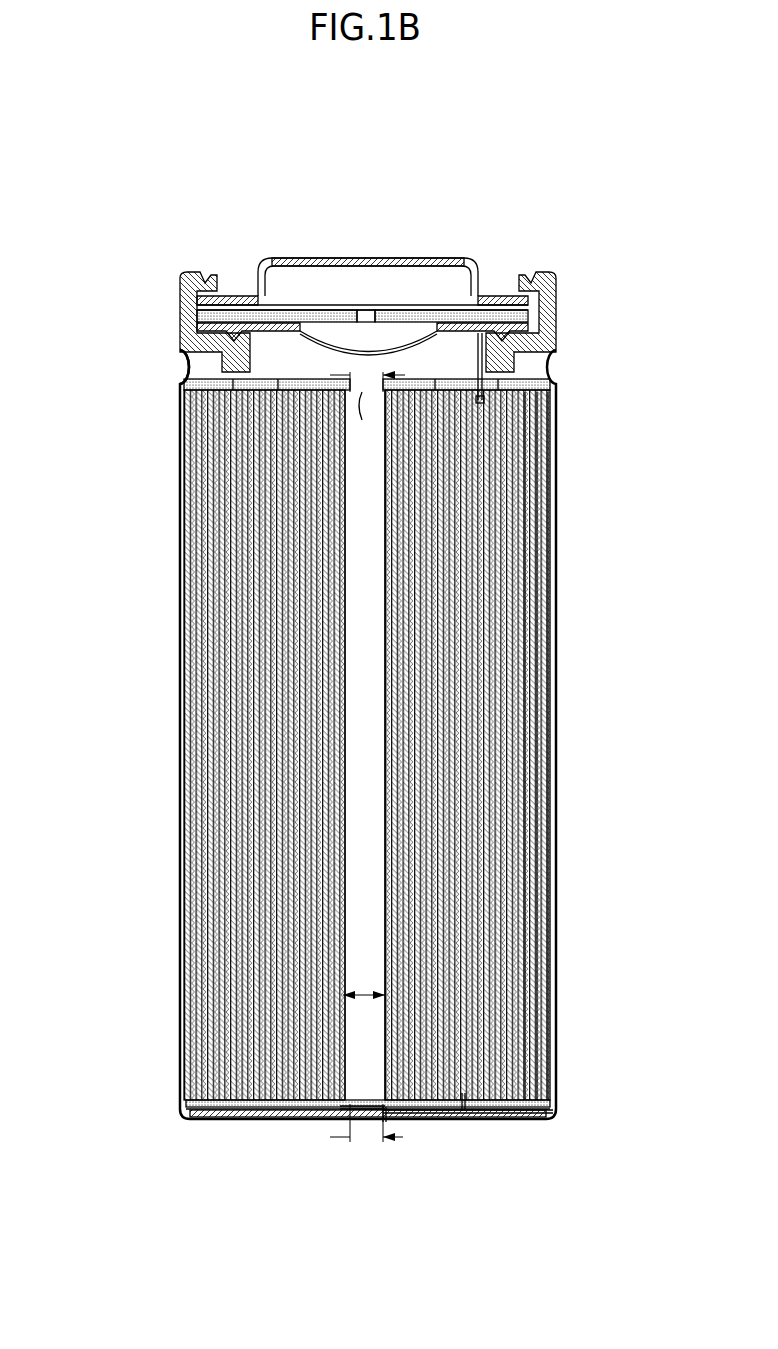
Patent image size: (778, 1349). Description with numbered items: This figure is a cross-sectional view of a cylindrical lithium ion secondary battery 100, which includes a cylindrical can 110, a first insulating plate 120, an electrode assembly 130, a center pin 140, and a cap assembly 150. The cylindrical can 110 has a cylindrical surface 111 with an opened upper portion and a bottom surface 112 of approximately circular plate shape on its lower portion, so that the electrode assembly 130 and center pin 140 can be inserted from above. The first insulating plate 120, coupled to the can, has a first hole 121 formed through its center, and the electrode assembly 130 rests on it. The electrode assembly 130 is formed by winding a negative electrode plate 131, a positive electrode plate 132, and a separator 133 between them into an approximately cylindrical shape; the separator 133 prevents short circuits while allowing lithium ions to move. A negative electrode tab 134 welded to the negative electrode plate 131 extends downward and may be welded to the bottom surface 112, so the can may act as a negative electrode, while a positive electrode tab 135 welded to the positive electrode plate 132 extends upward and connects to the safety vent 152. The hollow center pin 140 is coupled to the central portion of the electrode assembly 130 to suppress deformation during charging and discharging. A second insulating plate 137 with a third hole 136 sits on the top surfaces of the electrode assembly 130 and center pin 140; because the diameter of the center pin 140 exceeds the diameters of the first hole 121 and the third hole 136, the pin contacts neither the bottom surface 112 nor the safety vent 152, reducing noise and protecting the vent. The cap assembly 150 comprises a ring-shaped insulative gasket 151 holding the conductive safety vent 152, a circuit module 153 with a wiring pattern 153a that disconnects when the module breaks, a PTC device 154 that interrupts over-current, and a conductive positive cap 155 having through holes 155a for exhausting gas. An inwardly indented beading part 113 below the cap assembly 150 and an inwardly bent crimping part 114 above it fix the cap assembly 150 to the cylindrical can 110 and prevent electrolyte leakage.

The cylindrical lithium ion secondary battery 100 is at (72, 191).
The cylindrical can 110 is at (365, 700).
The cylindrical surface 111 is at (556, 1062).
The bottom surface 112 is at (520, 1119).
The beading part 113 is at (186, 368).
The crimping part 114 is at (205, 278).
The first insulating plate 120 is at (553, 1105).
The first hole 121 is at (384, 1122).
The electrode assembly 130 is at (408, 745).
The negative electrode plate 131 is at (549, 432).
The positive electrode plate 132 is at (540, 500).
The separator 133 is at (535, 462).
The negative electrode tab 134 is at (345, 1106).
The positive electrode tab 135 is at (486, 348).
The third hole 136 is at (348, 392).
The second insulating plate 137 is at (530, 386).
The center pin 140 is at (400, 771).
The cap assembly 150 is at (338, 270).
The insulative gasket 151 is at (536, 275).
The safety vent 152 is at (197, 328).
The circuit module 153 is at (313, 259).
The wiring pattern 153a is at (378, 322).
The positive temperature coefficient (PTC) device 154 is at (496, 296).
The positive cap 155 is at (238, 296).
The through holes 155a is at (468, 265).